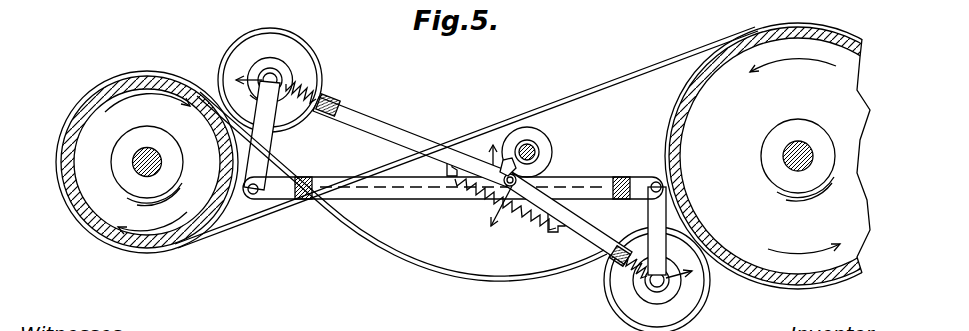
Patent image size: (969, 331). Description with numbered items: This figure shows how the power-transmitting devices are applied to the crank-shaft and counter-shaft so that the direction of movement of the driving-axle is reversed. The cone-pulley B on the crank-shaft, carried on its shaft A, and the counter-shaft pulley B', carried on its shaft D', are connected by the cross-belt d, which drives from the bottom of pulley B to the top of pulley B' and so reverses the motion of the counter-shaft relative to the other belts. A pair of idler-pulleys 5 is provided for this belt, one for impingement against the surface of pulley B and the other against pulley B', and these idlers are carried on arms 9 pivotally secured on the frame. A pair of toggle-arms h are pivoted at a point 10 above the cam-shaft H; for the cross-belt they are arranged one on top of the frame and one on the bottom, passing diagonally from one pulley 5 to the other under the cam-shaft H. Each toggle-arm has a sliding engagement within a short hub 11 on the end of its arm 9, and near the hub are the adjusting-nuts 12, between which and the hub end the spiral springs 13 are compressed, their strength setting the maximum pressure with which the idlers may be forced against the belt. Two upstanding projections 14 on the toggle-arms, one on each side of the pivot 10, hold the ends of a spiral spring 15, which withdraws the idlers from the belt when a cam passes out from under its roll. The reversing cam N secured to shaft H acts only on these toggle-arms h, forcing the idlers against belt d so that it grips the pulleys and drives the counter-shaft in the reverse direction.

The cone-pulley B is at (147, 162).
The driving shaft A is at (163, 161).
The counter-shaft pulley B' is at (798, 156).
The driven shaft D' is at (761, 154).
The cross-belt d is at (288, 213).
The idler-pulleys 5 is at (464, 169).
The short hub 11 is at (463, 158).
The arms supporting idler-pulleys 9 is at (649, 212).
The upstanding projections 14 is at (453, 209).
The toggle-arms h is at (472, 191).
The adjusting-nuts 12 is at (481, 206).
The spiral springs 13 is at (325, 82).
The pivot point 10 is at (504, 205).
The spiral spring 15 is at (504, 216).
The cam-shaft H is at (558, 156).
The reversing cam N is at (507, 166).